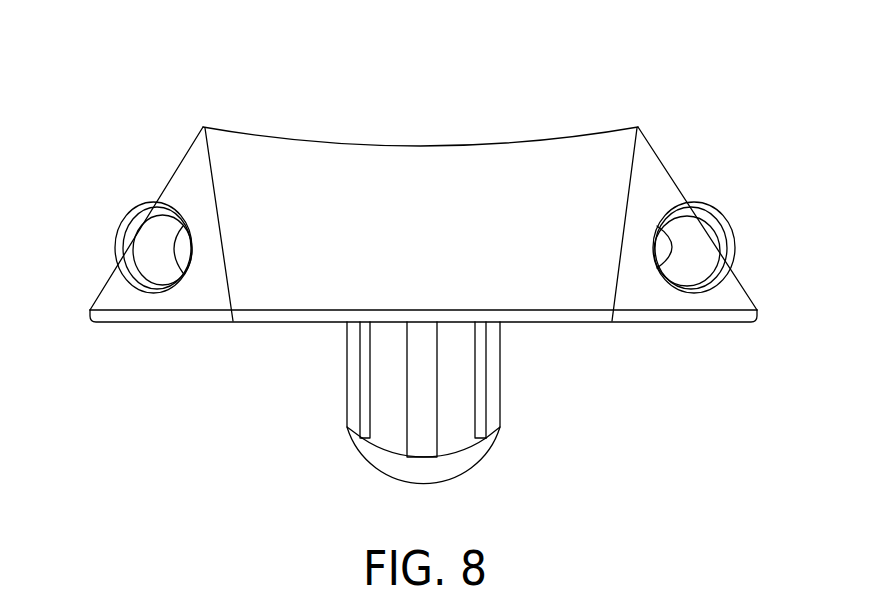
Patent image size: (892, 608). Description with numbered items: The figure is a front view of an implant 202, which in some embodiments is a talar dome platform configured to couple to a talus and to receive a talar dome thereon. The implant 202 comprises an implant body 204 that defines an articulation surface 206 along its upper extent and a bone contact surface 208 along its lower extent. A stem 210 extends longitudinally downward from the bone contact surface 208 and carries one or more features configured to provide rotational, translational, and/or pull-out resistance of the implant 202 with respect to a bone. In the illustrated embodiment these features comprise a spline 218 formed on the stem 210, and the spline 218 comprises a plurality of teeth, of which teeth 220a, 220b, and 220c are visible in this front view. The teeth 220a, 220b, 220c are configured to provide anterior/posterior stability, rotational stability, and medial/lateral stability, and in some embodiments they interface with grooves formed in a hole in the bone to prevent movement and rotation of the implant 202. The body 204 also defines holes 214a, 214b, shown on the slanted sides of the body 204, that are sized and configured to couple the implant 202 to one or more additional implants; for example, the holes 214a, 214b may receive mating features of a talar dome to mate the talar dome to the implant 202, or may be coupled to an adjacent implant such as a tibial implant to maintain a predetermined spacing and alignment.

The implant 202 is at (665, 88).
The implant body 204 is at (698, 190).
The articulation surface 206 is at (430, 153).
The bone contact surface 208 is at (248, 323).
The stem 210 is at (467, 454).
The hole 214a is at (697, 247).
The hole 214b is at (150, 246).
The spline 218 is at (463, 343).
The tooth 220a is at (495, 398).
The tooth 220b is at (415, 437).
The tooth 220c is at (348, 393).